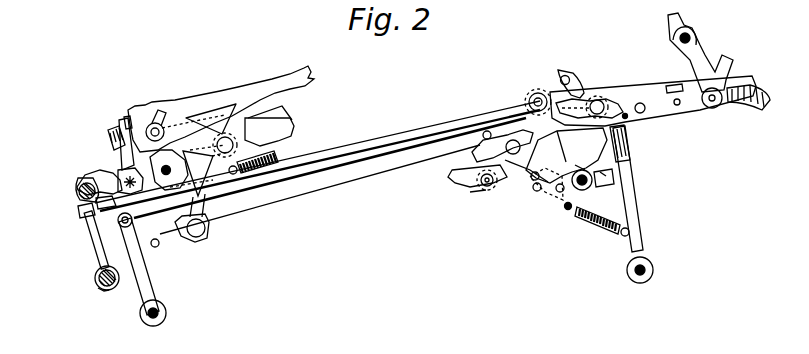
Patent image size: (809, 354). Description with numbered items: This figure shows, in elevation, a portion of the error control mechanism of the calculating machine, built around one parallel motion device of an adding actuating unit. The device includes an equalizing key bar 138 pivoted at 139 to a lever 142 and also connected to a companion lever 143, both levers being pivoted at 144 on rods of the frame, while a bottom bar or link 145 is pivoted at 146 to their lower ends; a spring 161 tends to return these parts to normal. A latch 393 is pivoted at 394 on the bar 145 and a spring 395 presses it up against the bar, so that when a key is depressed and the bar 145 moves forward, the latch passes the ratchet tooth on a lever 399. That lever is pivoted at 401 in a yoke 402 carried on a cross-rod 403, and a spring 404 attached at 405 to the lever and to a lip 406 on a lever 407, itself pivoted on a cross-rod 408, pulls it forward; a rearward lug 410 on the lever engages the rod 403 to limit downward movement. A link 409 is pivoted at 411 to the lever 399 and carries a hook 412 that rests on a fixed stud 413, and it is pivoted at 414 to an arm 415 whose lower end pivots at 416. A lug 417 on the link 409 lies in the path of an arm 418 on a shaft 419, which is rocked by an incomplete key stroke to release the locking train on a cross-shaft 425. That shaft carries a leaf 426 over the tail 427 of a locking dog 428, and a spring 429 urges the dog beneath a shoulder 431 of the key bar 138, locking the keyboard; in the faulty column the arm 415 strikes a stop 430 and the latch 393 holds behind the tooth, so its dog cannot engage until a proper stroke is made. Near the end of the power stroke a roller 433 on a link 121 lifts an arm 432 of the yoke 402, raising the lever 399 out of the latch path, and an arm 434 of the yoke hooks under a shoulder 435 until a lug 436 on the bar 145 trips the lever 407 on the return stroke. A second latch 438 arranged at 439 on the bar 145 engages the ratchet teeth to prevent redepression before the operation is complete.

The link 121 is at (453, 180).
The equalizing key bar 138 is at (232, 95).
The pivot 139 is at (247, 123).
The lever 142 is at (217, 180).
The lever 143 is at (725, 68).
The pivot 144 is at (166, 165).
The bottom bar or link 145 is at (318, 192).
The pivot 146 is at (206, 238).
The spring 161 is at (283, 153).
The latch 393 is at (535, 180).
The pivot 394 is at (525, 170).
The spring 395 is at (500, 138).
The lever 399 is at (553, 153).
The pivot 401 is at (562, 208).
The yoke 402 is at (592, 186).
The cross-rod 403 is at (578, 168).
The spring 404 is at (597, 224).
The attachment point 405 is at (567, 212).
The lip 406 is at (629, 231).
The lever 407 is at (638, 246).
The cross-rod 408 is at (650, 270).
The link 409 is at (357, 152).
The lug 410 is at (618, 126).
The pivot 411 is at (538, 89).
The hook 412 is at (579, 78).
The stud 413 is at (563, 77).
The pivot 414 is at (120, 223).
The arm 415 is at (152, 288).
The pivot 416 is at (160, 313).
The lug 417 is at (83, 213).
The arm 418 is at (102, 262).
The shaft 419 is at (103, 292).
The cross-shaft 425 is at (79, 190).
The leaf 426 is at (98, 205).
The tail 427 is at (92, 172).
The locking dog 428 is at (107, 137).
The spring 429 is at (103, 157).
The stop 430 is at (158, 246).
The shoulder 431 is at (126, 116).
The arm 432 is at (537, 190).
The roller 433 is at (478, 195).
The arm 434 is at (612, 178).
The shoulder 435 is at (618, 175).
The lug 436 is at (608, 128).
The latch 438 is at (584, 100).
The pivot 439 is at (592, 100).